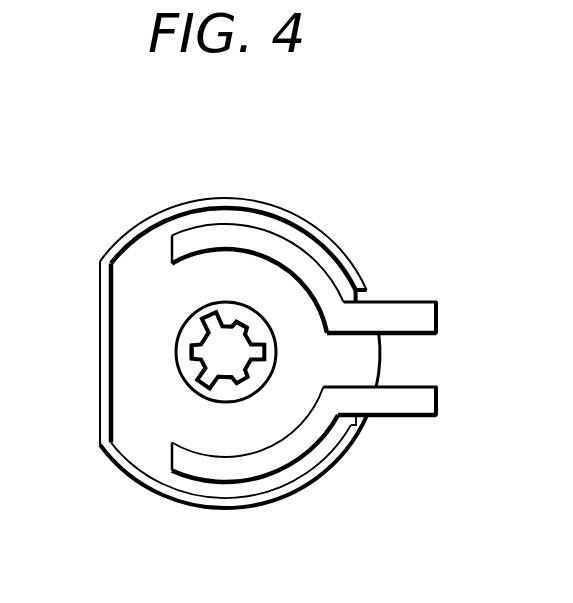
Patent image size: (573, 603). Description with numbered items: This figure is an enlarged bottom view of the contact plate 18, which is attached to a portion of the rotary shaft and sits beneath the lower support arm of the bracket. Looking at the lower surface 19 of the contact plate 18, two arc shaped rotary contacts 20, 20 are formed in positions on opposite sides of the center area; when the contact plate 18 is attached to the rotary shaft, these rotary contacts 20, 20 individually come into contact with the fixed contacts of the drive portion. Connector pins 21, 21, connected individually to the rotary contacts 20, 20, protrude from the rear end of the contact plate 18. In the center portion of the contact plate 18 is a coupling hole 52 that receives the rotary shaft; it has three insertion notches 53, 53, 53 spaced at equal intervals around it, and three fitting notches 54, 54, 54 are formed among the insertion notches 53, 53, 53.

The contact plate 18 is at (275, 328).
The lower surface 19 is at (288, 412).
The rotary contact 20 is at (262, 238).
The connector pin 21 is at (423, 320).
The coupling hole 52 is at (198, 326).
The insertion notch 53 is at (196, 334).
The fitting notch 54 is at (238, 322).